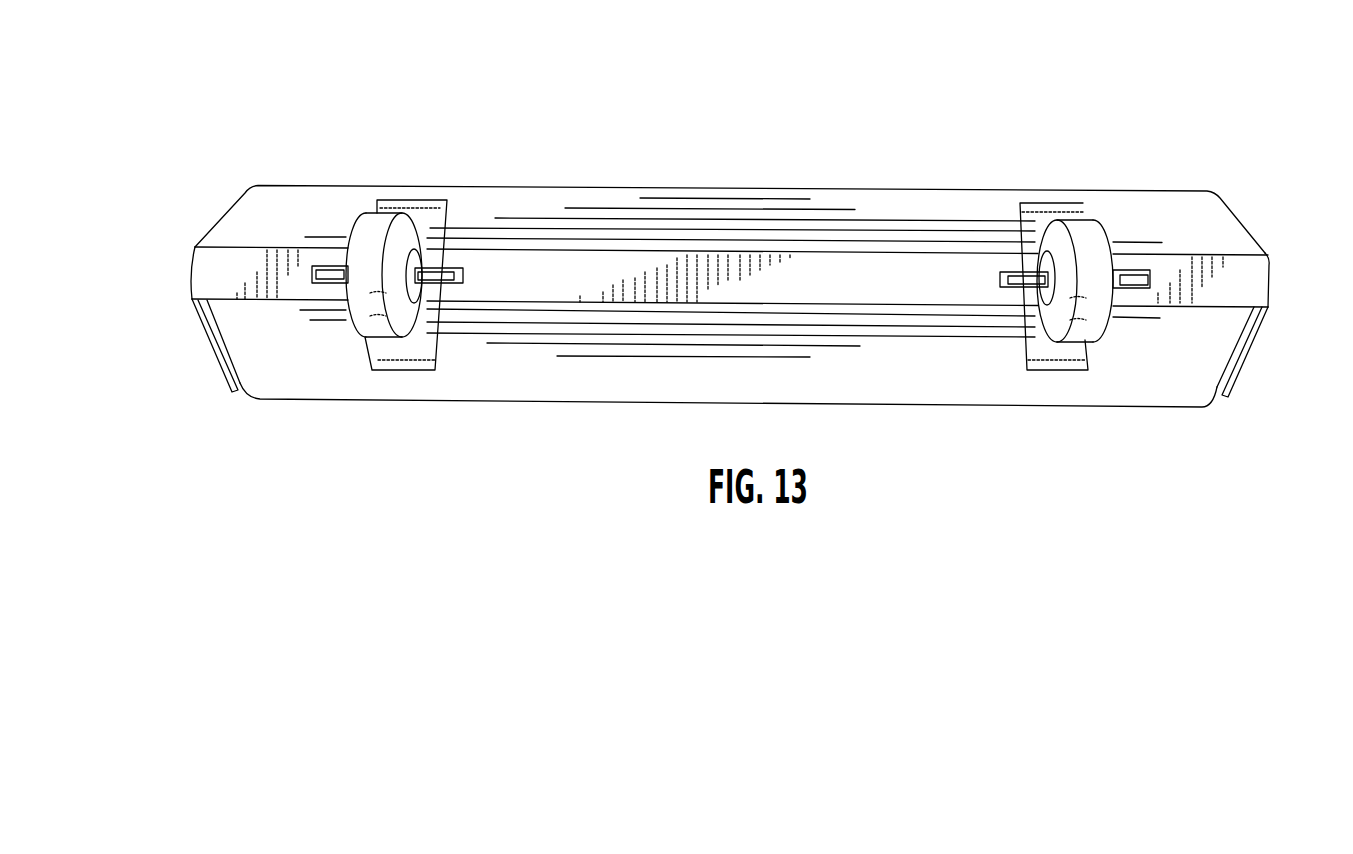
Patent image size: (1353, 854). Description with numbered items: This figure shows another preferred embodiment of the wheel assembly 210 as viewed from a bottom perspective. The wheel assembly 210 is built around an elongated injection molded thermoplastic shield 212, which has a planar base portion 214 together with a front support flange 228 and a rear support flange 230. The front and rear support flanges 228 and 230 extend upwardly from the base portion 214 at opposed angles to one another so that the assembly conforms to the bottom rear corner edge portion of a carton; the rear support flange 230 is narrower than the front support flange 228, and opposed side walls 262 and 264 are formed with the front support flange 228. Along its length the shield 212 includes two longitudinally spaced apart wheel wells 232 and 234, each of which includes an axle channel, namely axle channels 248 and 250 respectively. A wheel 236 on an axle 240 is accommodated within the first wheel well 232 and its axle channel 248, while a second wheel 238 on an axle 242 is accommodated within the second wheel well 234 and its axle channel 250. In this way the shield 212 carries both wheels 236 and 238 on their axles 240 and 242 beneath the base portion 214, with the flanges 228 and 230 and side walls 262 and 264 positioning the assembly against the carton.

The wheel assembly 210 is at (924, 85).
The shield 212 is at (778, 188).
The base portion 214 is at (1255, 283).
The front support flange 228 is at (1185, 202).
The rear support flange 230 is at (1167, 388).
The wheel well 232 is at (405, 360).
The wheel well 234 is at (1058, 365).
The wheel 236 is at (376, 242).
The wheel 238 is at (1088, 253).
The axle 240 is at (430, 276).
The axle 242 is at (1025, 280).
The axle channel 248 is at (463, 278).
The axle channel 250 is at (998, 281).
The side wall 262 is at (212, 345).
The side wall 264 is at (1250, 360).